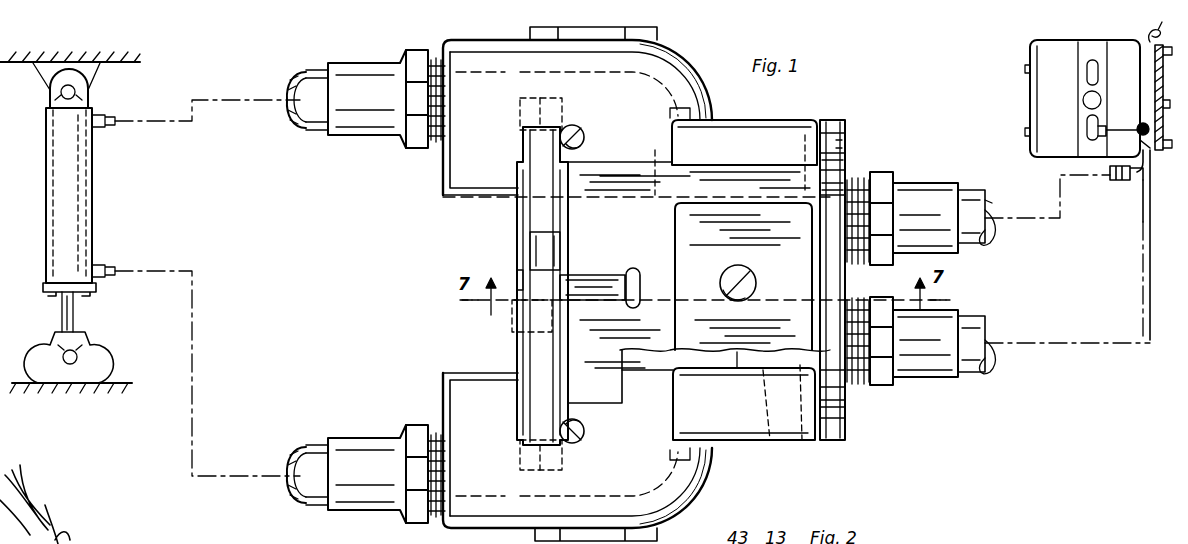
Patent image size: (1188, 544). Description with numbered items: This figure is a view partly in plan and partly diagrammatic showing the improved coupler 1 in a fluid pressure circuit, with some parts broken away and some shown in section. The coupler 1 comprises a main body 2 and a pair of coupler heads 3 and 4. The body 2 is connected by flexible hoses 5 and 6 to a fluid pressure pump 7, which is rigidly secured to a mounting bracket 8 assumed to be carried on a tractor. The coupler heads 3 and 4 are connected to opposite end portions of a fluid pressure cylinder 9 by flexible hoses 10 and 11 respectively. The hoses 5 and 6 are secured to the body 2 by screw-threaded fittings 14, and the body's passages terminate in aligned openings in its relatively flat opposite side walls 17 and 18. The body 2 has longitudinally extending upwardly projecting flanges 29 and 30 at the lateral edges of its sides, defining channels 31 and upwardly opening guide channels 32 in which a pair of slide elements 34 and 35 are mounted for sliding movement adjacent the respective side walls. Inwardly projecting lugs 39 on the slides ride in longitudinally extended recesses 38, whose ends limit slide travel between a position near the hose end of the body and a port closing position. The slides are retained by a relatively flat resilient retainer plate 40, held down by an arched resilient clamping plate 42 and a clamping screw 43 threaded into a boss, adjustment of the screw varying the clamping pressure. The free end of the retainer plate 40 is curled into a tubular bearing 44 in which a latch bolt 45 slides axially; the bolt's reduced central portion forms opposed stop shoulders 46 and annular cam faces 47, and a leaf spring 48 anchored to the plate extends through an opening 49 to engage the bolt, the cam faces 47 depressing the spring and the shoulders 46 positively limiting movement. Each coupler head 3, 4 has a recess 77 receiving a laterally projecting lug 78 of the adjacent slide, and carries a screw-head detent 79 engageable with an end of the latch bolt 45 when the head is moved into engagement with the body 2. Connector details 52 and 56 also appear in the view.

The coupler 1 is at (845, 418).
The main body 2 is at (737, 368).
The coupler head 3 is at (480, 107).
The coupler head 4 is at (462, 395).
The flexible hose 5 is at (970, 207).
The flexible hose 6 is at (1140, 195).
The fluid pressure pump 7 is at (1050, 97).
The mounting bracket 8 is at (1152, 25).
The fluid pressure cylinder 9 is at (77, 212).
The flexible hose 10 is at (290, 130).
The flexible hose 11 is at (300, 445).
The fitting 14 is at (912, 190).
The side wall 17 is at (835, 150).
The side wall 18 is at (838, 412).
The flange 29 is at (838, 178).
The flange 30 is at (831, 125).
The channel 31 is at (840, 190).
The guide channel 32 is at (850, 125).
The slide element 34 is at (770, 137).
The slide element 35 is at (716, 414).
The recess 38 is at (655, 150).
The lug 39 is at (808, 130).
The retainer plate 40 is at (660, 250).
The clamping plate 42 is at (778, 268).
The clamping screw 43 is at (757, 283).
The tubular bearing 44 is at (540, 208).
The latch bolt 45 is at (520, 108).
The stop shoulder 46 is at (520, 255).
The annular cam face 47 is at (515, 276).
The leaf spring 48 is at (588, 286).
The opening 49 is at (585, 302).
The pipe connector 52 is at (373, 120).
The mounting lug 56 is at (657, 33).
The recess 77 is at (700, 92).
The lug 78 is at (525, 462).
The detent 79 is at (575, 125).